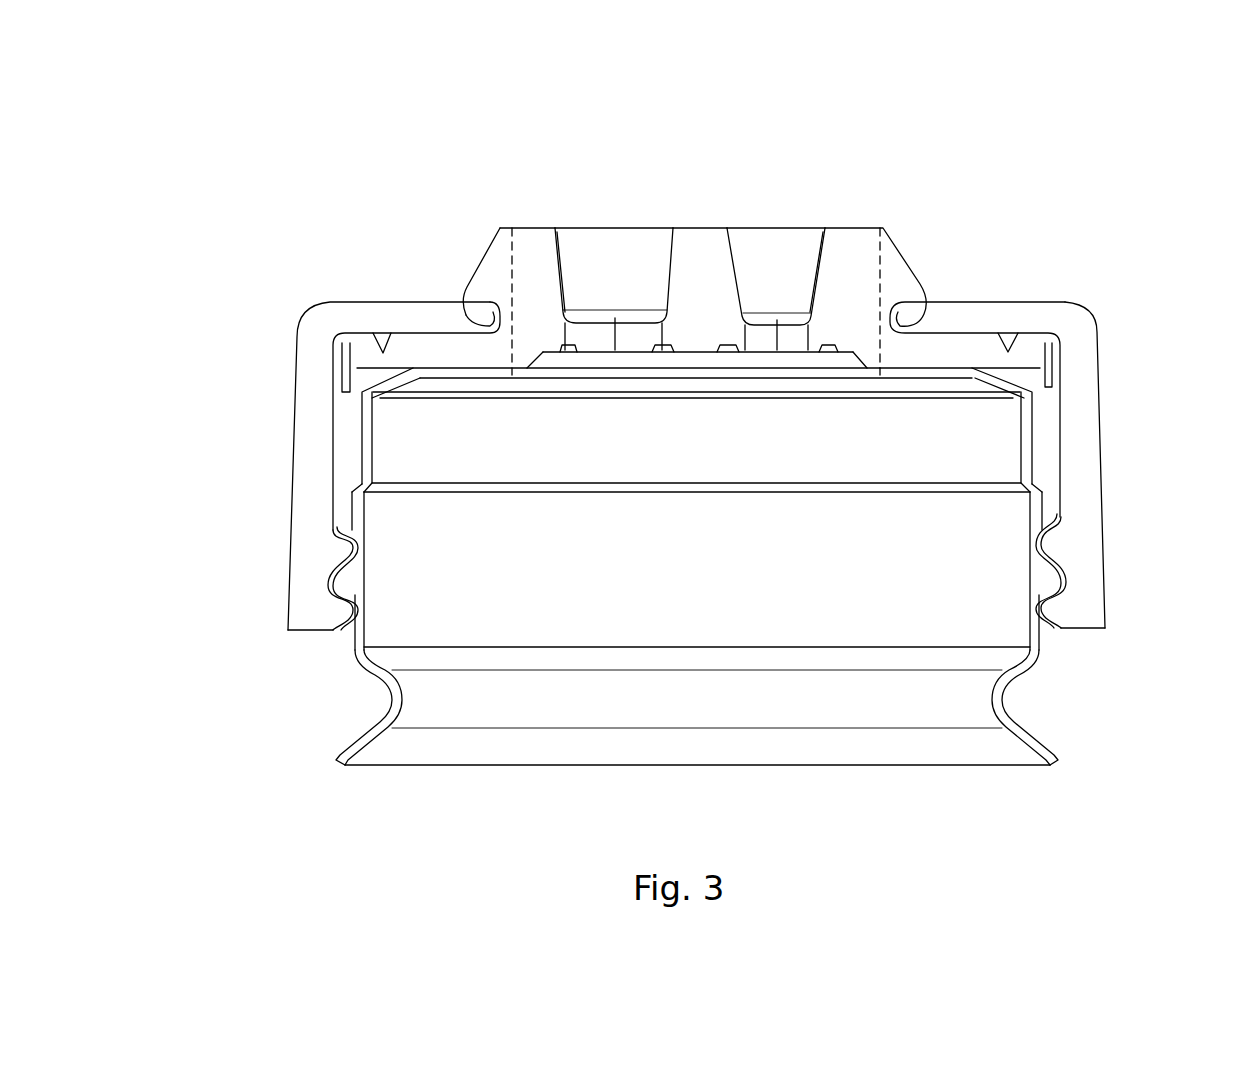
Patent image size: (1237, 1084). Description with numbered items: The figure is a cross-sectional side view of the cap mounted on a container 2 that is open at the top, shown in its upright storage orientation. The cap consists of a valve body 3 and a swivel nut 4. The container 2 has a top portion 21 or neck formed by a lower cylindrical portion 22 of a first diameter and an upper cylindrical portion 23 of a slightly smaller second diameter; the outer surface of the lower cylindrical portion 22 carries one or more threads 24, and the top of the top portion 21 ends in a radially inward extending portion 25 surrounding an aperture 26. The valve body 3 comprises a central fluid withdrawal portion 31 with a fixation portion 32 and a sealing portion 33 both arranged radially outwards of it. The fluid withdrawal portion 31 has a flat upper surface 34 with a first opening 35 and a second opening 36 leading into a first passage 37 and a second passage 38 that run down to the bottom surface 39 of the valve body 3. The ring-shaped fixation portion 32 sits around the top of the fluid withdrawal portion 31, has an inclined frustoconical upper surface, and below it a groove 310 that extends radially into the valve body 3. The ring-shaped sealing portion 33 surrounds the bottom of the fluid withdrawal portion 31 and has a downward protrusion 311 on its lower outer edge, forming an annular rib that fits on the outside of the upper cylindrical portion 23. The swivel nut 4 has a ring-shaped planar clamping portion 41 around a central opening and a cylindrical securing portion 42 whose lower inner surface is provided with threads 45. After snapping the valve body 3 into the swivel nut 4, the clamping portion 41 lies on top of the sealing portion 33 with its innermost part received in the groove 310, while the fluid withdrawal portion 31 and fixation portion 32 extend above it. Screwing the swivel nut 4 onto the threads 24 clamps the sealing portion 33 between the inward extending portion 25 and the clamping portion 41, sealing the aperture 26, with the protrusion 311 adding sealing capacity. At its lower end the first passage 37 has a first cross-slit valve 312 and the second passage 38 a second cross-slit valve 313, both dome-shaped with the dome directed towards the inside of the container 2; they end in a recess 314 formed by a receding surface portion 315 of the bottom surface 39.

The container 2 is at (1072, 750).
The valve body 3 is at (727, 207).
The swivel nut 4 is at (285, 321).
The top portion 21 is at (575, 597).
The lower cylindrical portion 22 is at (410, 528).
The upper cylindrical portion 23 is at (410, 436).
The threads 24 is at (1047, 557).
The radially inward extending portion 25 is at (413, 375).
The aperture 26 is at (473, 377).
The central fluid withdrawal portion 31 is at (703, 262).
The fixation portion 32 is at (502, 262).
The sealing portion 33 is at (960, 343).
The flat upper surface 34 is at (848, 228).
The first opening 35 is at (609, 228).
The second opening 36 is at (772, 228).
The first passage 37 is at (588, 272).
The second passage 38 is at (798, 270).
The bottom surface 39 is at (888, 367).
The clamping portion 41 is at (345, 322).
The securing portion 42 is at (1078, 425).
The threads 45 is at (1050, 537).
The groove 310 is at (495, 320).
The protrusion 311 is at (1040, 375).
The first cross-slit valve 312 is at (614, 350).
The second cross-slit valve 313 is at (777, 347).
The recess 314 is at (822, 363).
The receding surface portion 315 is at (690, 350).